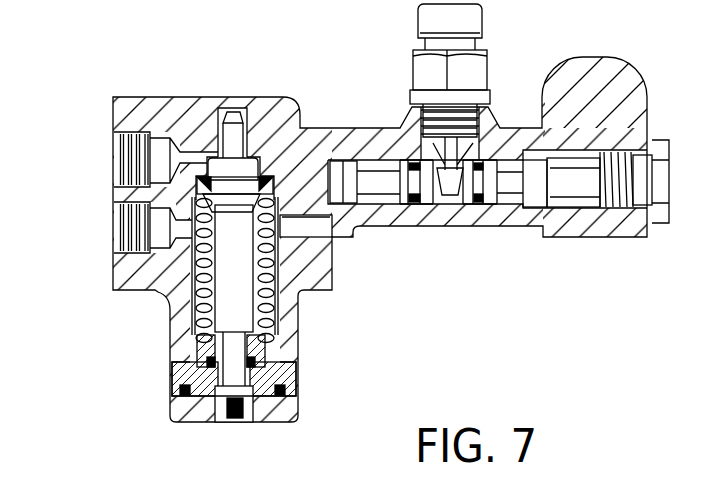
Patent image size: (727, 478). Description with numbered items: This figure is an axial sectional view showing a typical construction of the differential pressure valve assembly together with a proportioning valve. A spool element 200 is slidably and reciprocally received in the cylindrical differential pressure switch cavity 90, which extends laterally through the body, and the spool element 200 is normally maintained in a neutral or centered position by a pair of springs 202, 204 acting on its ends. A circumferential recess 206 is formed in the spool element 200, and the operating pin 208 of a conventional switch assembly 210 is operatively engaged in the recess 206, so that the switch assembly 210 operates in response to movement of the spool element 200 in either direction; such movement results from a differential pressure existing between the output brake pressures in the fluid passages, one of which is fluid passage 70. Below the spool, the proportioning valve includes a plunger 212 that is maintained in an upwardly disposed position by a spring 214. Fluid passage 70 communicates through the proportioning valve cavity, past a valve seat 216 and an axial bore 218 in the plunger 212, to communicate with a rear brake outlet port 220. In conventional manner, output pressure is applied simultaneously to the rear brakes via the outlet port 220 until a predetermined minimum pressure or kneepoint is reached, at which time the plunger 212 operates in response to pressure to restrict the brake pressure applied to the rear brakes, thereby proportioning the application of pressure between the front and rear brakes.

The fluid passage 70 is at (323, 240).
The differential pressure switch cavity 90 is at (495, 218).
The spool element 200 is at (126, 163).
The spring 202 is at (360, 158).
The spring 204 is at (522, 190).
The circumferential recess 206 is at (452, 206).
The operating pin 208 is at (433, 158).
The switch assembly 210 is at (470, 66).
The plunger 212 is at (240, 290).
The spring 214 is at (265, 366).
The valve seat 216 is at (253, 392).
The axial bore 218 is at (232, 372).
The rear brake outlet port 220 is at (130, 238).